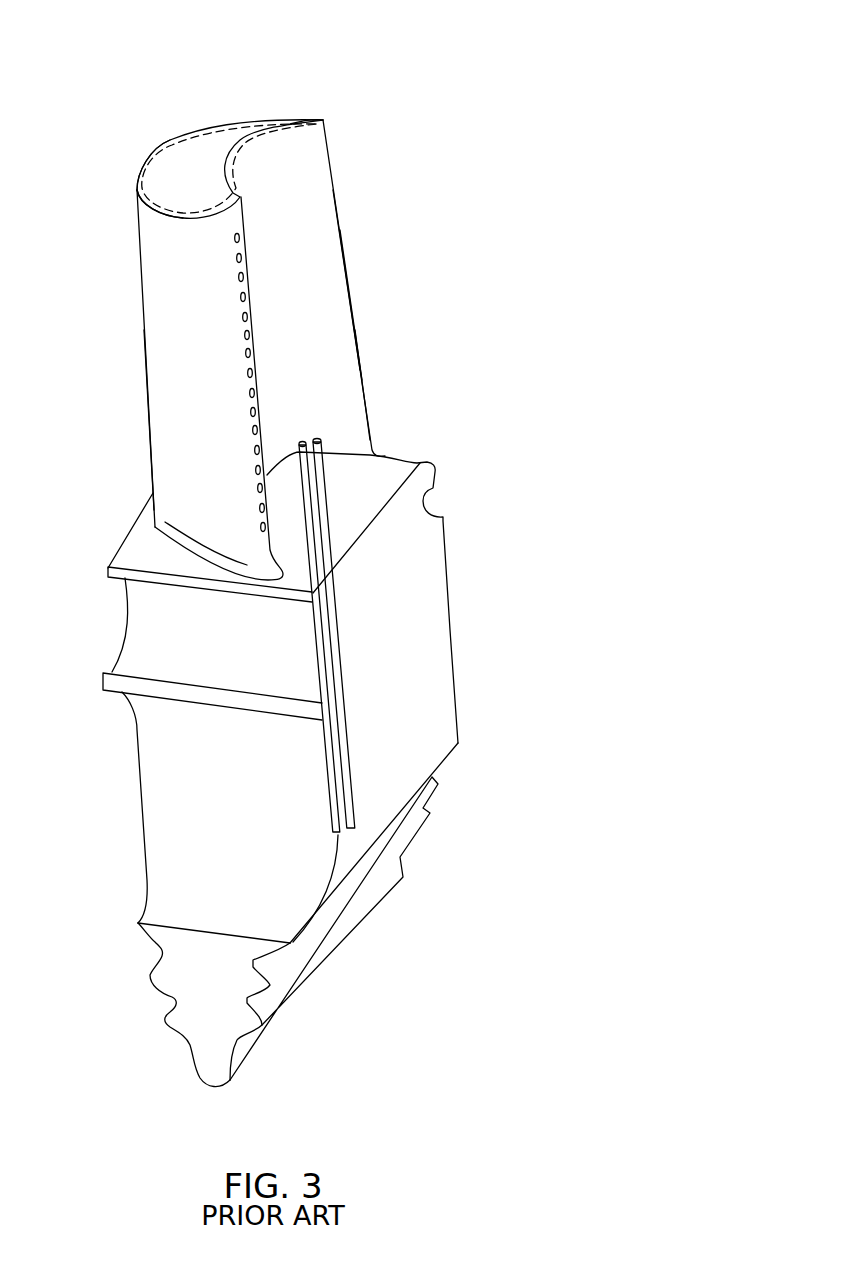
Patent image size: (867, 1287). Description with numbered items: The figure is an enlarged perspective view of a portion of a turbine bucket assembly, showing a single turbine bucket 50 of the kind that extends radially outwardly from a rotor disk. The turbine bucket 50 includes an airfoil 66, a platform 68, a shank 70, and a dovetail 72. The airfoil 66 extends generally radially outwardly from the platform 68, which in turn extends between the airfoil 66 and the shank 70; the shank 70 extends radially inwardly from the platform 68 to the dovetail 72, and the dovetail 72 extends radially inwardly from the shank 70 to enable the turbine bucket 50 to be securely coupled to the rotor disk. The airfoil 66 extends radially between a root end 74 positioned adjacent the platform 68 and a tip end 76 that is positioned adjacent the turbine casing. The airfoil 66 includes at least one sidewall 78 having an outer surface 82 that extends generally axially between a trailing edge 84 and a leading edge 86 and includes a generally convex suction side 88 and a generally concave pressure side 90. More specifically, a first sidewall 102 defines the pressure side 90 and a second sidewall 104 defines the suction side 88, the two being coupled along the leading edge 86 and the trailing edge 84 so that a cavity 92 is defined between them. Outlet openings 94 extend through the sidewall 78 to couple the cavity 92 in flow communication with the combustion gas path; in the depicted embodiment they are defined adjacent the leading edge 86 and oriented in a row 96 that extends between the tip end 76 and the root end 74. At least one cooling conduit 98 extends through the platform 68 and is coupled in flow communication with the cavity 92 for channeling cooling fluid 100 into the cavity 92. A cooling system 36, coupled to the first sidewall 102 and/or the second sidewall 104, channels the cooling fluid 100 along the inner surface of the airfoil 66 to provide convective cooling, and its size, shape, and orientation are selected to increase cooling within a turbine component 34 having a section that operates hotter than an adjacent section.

The turbine component 34 is at (428, 322).
The cooling system 36 is at (372, 247).
The turbine bucket 50 is at (450, 155).
The airfoil 66 is at (162, 387).
The platform 68 is at (132, 558).
The shank 70 is at (158, 790).
The dovetail 72 is at (158, 972).
The root end 74 is at (158, 527).
The tip end 76 is at (168, 139).
The sidewall 78 is at (148, 167).
The outer surface 82 is at (333, 298).
The trailing edge 84 is at (363, 386).
The leading edge 86 is at (257, 343).
The suction side 88 is at (153, 293).
The pressure side 90 is at (320, 200).
The cavity 92 is at (199, 135).
The outlet opening 94 is at (248, 373).
The row 96 is at (232, 279).
The cooling conduit 98 is at (347, 692).
The cooling fluid 100 is at (296, 418).
The first sidewall 102 is at (138, 190).
The second sidewall 104 is at (319, 118).